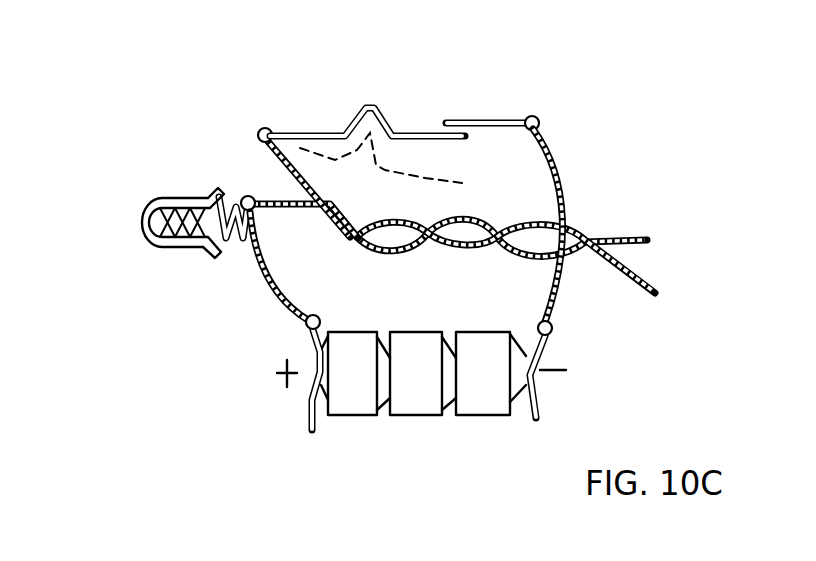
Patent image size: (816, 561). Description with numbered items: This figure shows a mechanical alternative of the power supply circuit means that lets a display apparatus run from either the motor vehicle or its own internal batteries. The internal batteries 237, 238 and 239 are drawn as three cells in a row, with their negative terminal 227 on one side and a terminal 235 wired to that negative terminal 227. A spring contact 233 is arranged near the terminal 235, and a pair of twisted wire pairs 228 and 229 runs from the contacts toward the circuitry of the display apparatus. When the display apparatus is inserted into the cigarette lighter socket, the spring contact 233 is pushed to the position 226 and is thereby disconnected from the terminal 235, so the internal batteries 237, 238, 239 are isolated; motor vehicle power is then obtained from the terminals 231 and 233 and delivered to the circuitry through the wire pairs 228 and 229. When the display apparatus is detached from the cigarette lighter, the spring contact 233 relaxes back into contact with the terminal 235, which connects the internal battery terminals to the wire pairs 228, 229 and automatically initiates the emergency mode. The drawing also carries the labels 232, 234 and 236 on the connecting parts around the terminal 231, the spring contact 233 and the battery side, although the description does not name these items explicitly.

The position of spring contact 226 is at (440, 173).
The negative terminal 227 is at (537, 408).
The wire pair 228 is at (621, 237).
The wire pair 229 is at (636, 282).
The terminal 231 is at (163, 197).
The spring band 232 is at (240, 240).
The spring contact 233 is at (410, 128).
The diagonal band 234 is at (300, 150).
The terminal 235 is at (493, 119).
The positive electrode contact 236 is at (308, 403).
The internal battery 237 is at (350, 410).
The internal battery 238 is at (413, 410).
The internal battery 239 is at (480, 408).